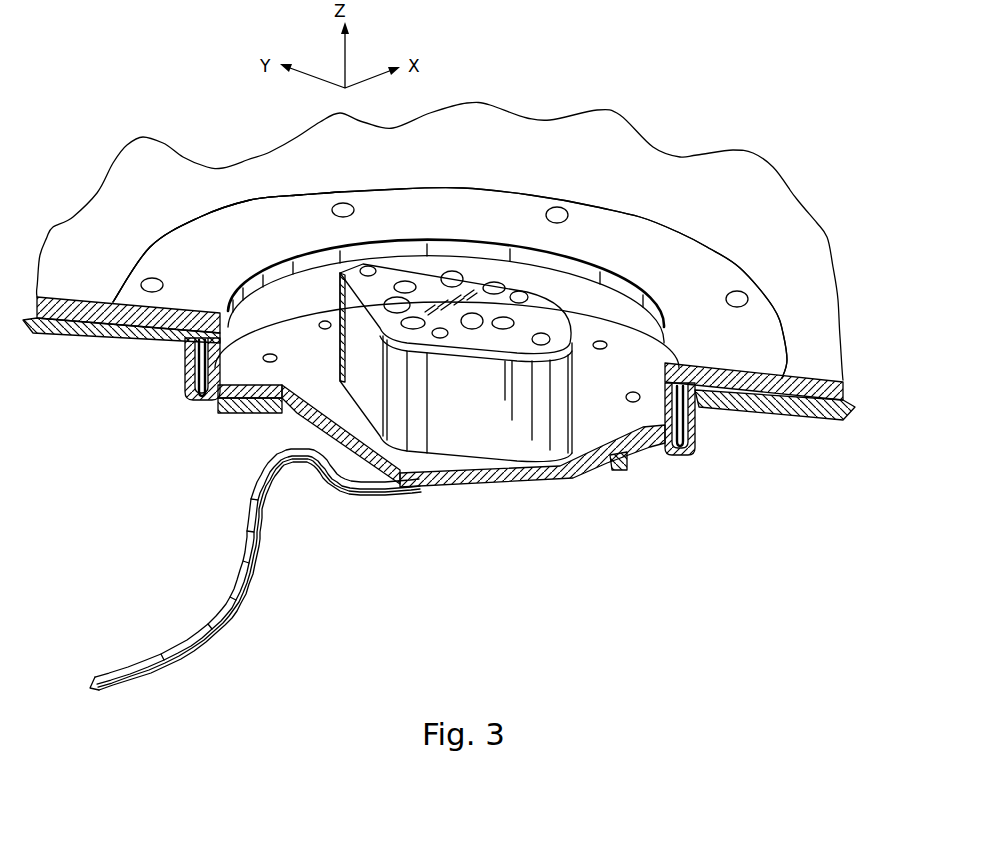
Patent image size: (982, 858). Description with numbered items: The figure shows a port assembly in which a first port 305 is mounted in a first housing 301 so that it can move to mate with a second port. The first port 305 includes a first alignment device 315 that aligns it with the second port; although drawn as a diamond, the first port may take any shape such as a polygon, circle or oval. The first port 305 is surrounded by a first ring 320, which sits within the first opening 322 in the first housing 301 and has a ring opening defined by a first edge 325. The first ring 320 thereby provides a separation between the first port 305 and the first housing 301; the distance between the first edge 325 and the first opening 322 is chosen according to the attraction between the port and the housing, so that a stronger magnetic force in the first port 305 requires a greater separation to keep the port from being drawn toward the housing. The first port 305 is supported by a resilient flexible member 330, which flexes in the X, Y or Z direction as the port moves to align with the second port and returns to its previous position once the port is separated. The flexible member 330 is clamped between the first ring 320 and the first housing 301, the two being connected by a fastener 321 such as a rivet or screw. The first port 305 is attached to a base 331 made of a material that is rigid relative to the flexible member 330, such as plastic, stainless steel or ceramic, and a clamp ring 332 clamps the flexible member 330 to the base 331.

The first housing 301 is at (433, 155).
The first port 305 is at (467, 288).
The first alignment device 315 is at (478, 300).
The first ring 320 is at (687, 270).
The fastener 321 is at (567, 208).
The first opening 322 is at (317, 195).
The first edge 325 is at (330, 194).
The flexible member 330 is at (181, 378).
The base 331 is at (278, 415).
The clamp ring 332 is at (227, 409).